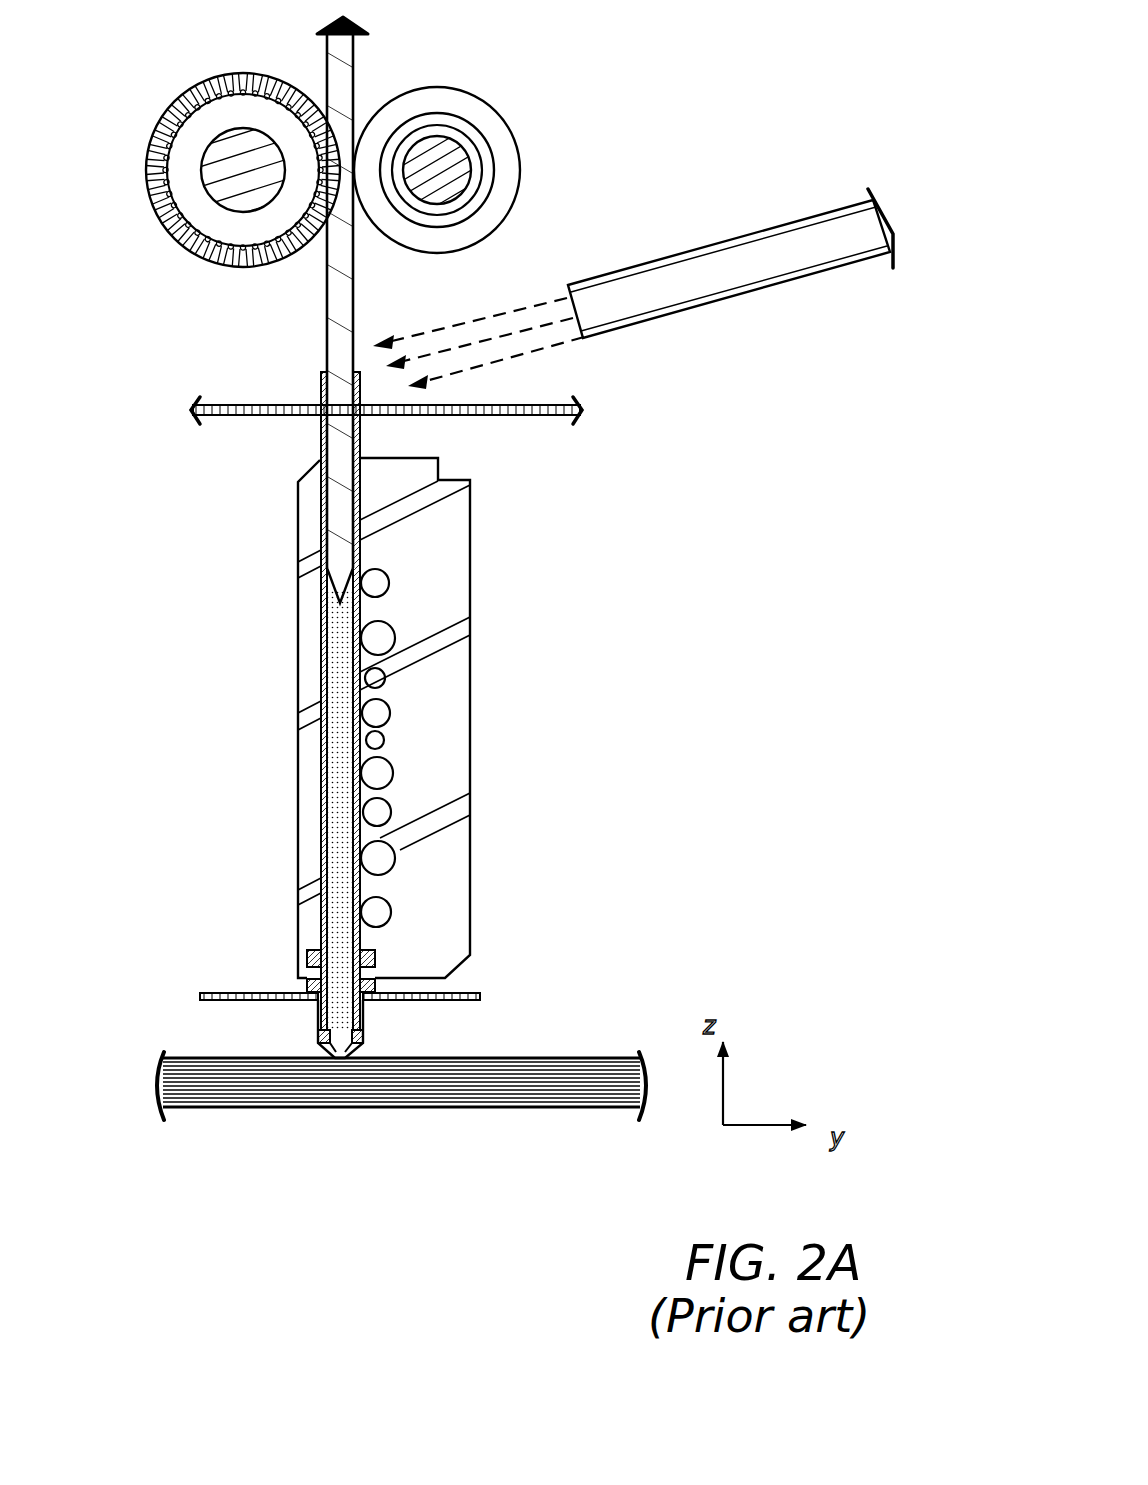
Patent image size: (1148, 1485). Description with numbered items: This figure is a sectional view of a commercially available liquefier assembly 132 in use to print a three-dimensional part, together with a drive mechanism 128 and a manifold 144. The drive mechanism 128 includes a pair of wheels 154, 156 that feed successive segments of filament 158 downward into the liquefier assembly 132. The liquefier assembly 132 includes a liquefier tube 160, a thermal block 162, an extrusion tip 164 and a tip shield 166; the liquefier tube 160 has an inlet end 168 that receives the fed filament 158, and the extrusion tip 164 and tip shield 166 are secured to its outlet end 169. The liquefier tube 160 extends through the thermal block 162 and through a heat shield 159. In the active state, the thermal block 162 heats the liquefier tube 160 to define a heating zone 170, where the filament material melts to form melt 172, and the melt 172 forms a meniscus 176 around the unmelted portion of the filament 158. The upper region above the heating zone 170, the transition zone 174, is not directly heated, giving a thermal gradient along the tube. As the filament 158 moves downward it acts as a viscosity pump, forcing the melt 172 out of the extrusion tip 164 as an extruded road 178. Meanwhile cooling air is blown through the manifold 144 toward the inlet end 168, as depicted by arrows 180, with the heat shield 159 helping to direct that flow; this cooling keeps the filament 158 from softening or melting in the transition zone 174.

The drive mechanism 128 is at (560, 142).
The liquefier assembly 132 is at (587, 652).
The manifold 144 is at (763, 232).
The wheel 154 is at (151, 206).
The wheel 156 is at (513, 187).
The filament 158 is at (347, 88).
The heat shield 159 is at (545, 417).
The liquefier tube 160 is at (327, 680).
The thermal block 162 is at (463, 743).
The extrusion tip 164 is at (363, 1042).
The tip shield 166 is at (490, 992).
The inlet end 168 is at (318, 362).
The outlet end 169 is at (300, 1020).
The heating zone 170 is at (163, 456).
The melt 172 is at (338, 773).
The transition zone 174 is at (163, 372).
The meniscus 176 is at (318, 598).
The extruded road 178 is at (182, 1055).
The arrows 180 is at (484, 358).